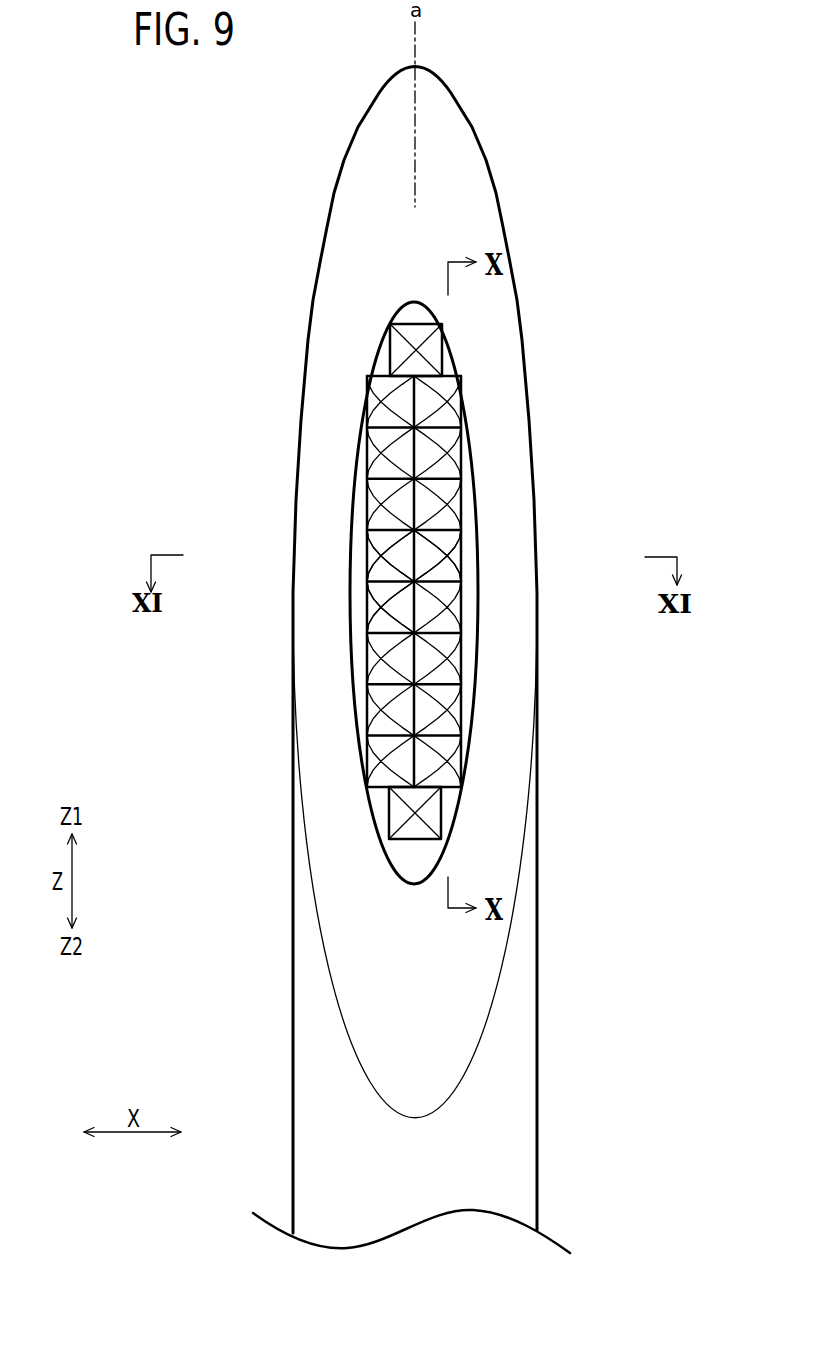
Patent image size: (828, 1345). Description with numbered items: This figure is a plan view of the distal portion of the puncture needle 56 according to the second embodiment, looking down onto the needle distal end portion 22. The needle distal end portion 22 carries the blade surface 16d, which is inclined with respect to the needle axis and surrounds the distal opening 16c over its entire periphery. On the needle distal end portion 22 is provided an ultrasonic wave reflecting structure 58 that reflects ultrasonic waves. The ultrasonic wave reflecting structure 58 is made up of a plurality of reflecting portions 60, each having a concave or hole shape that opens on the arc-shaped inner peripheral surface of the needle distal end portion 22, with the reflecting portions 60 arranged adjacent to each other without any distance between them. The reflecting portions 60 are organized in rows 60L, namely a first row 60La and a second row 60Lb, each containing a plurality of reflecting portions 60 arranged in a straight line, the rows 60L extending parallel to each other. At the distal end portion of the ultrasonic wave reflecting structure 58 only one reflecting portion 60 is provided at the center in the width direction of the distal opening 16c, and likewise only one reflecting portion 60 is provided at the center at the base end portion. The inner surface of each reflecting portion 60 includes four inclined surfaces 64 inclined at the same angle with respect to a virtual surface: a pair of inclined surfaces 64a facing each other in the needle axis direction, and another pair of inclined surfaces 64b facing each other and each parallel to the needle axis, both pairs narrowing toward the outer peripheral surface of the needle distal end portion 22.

The puncture needle 56 is at (200, 162).
The needle distal end portion 22 is at (325, 223).
The blade surface 16d is at (353, 287).
The distal opening 16c is at (352, 680).
The ultrasonic wave reflecting structure 58 is at (363, 727).
The reflecting portion 60 is at (402, 345).
The rows 60L is at (414, 581).
The first row 60La is at (464, 457).
The second row 60Lb is at (363, 453).
The inclined surfaces 64 is at (419, 570).
The inclined surfaces 64a is at (380, 540).
The inclined surfaces 64b is at (400, 555).